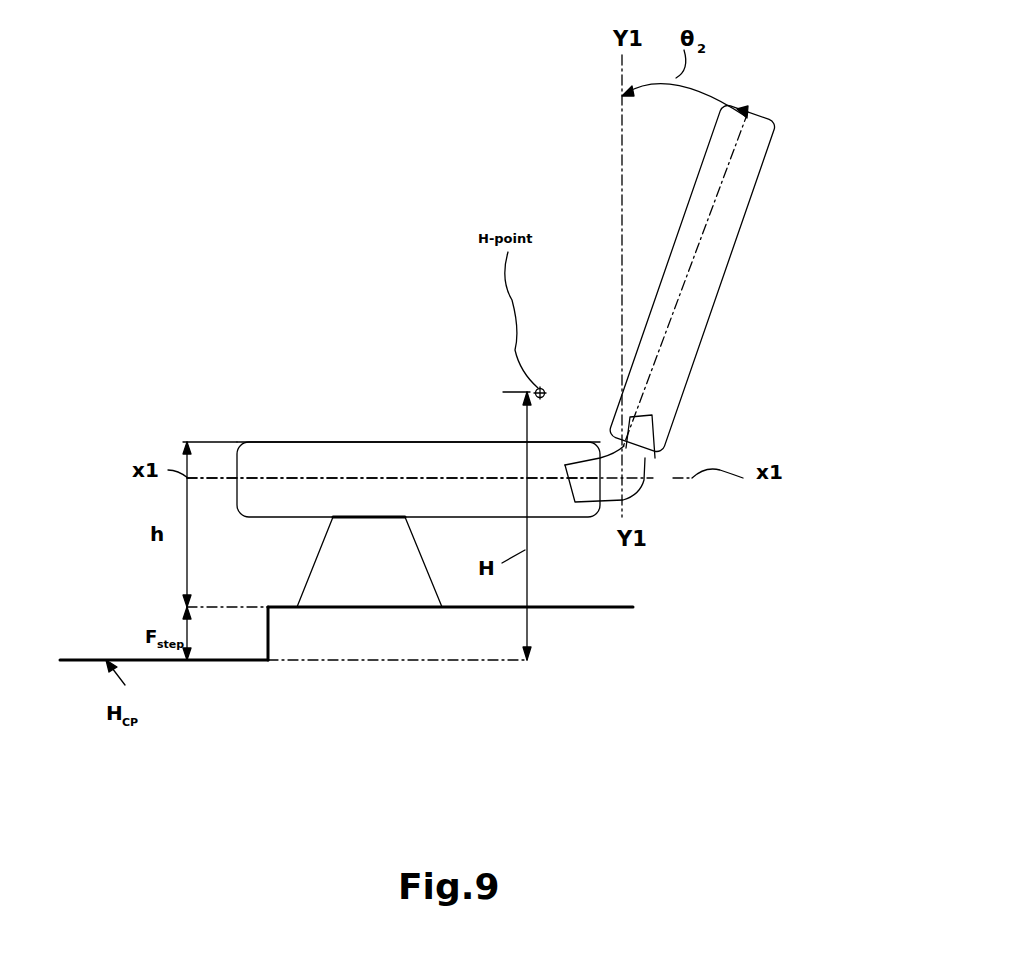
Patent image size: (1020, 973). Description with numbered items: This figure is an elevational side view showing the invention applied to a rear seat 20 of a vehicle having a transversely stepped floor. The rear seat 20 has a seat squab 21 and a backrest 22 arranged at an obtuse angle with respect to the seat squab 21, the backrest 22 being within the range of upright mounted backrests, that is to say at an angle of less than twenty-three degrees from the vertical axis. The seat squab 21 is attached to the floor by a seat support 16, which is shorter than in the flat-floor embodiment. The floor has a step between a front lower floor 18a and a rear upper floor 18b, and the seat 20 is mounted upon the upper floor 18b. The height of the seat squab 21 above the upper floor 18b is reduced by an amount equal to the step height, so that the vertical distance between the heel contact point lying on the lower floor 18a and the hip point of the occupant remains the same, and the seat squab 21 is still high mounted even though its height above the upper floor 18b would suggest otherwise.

The rear seat 20 is at (500, 438).
The seat squab 21 is at (363, 442).
The backrest 22 is at (752, 203).
The seat support 16 is at (300, 585).
The front lower floor 18a is at (225, 663).
The rear upper floor 18b is at (585, 610).